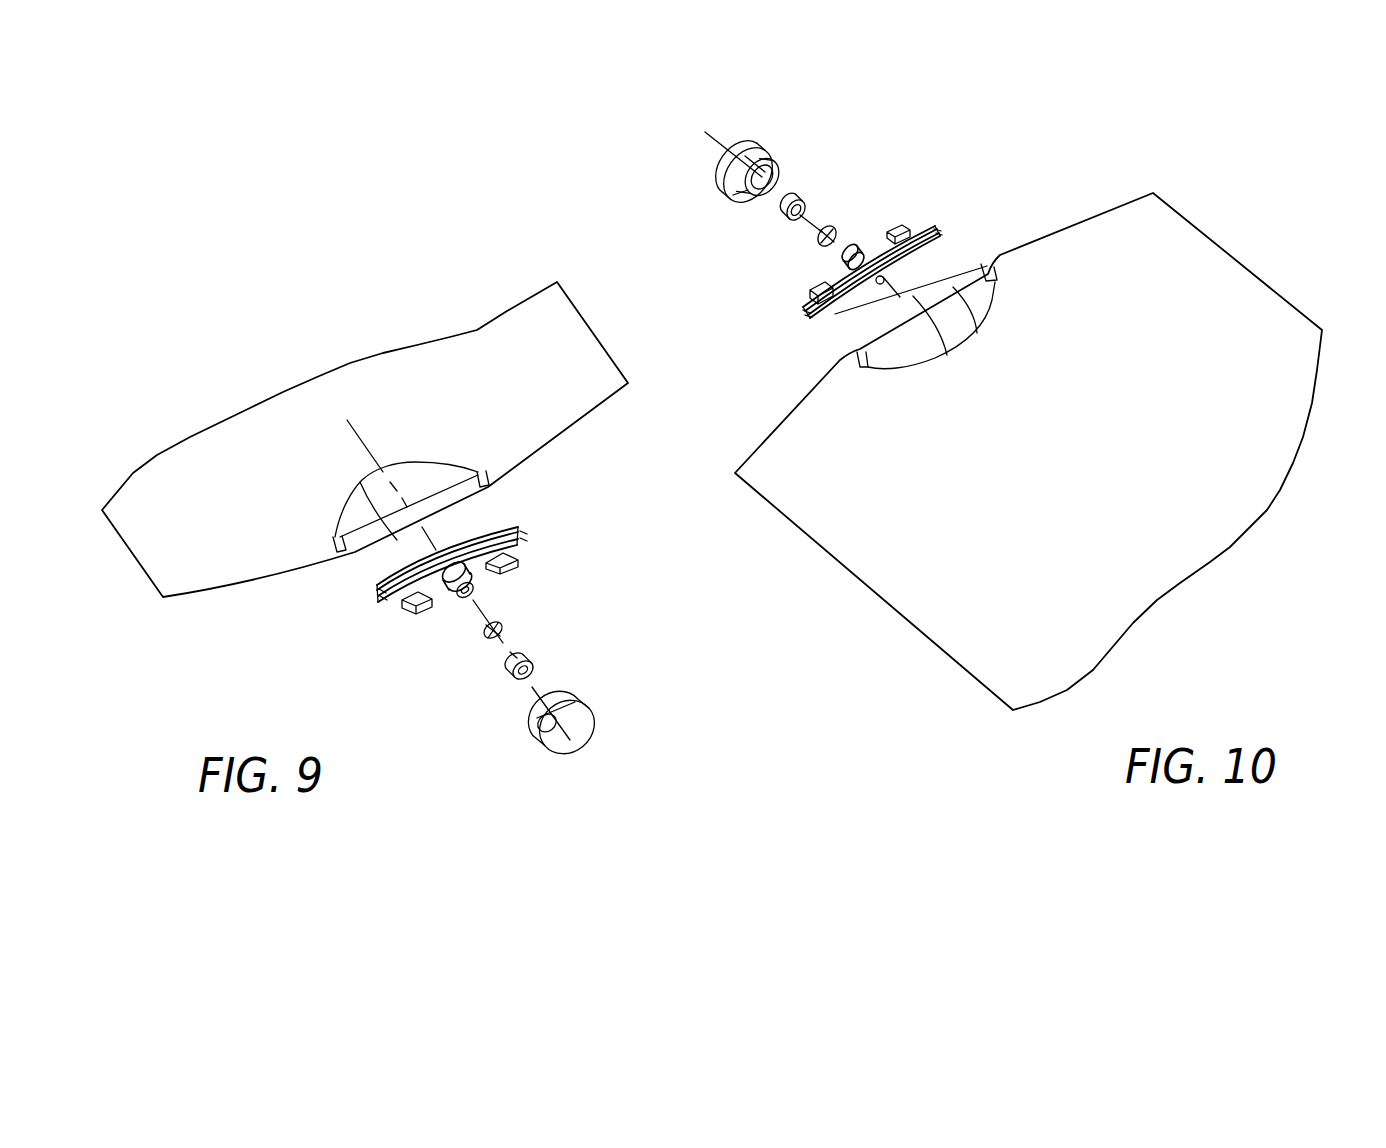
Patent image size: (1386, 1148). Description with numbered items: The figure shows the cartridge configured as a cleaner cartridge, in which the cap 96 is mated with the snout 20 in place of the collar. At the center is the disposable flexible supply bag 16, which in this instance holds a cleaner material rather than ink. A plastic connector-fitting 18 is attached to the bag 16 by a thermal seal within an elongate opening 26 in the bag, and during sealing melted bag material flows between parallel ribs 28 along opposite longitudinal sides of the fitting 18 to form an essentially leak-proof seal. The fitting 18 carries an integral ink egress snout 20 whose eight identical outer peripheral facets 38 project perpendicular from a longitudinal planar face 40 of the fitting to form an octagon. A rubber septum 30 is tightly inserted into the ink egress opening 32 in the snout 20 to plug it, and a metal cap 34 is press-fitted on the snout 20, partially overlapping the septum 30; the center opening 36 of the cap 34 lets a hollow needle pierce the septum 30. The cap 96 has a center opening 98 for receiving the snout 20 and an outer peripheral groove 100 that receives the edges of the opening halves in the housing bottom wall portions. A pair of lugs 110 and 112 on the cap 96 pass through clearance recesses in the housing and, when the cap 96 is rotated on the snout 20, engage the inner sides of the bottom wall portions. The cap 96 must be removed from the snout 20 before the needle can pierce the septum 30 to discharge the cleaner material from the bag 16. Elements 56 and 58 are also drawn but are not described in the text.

In FIG. 9, the flexible supply bag 16 is at (243, 382).
In FIG. 10, the flexible supply bag 16 is at (1233, 593).
In FIG. 9, the connector-fitting 18 is at (363, 600).
In FIG. 10, the connector-fitting 18 is at (797, 340).
In FIG. 9, the ink egress snout 20 is at (449, 604).
In FIG. 10, the ink egress snout 20 is at (803, 297).
In FIG. 9, the elongate opening 26 is at (372, 508).
In FIG. 10, the elongate opening 26 is at (870, 332).
In FIG. 9, the parallel ribs 28 is at (403, 577).
In FIG. 10, the parallel ribs 28 is at (937, 233).
In FIG. 9, the rubber septum 30 is at (503, 628).
In FIG. 10, the rubber septum 30 is at (837, 233).
In FIG. 9, the ink egress opening 32 is at (473, 587).
In FIG. 10, the ink egress opening 32 is at (884, 285).
In FIG. 9, the cap 34 is at (530, 657).
In FIG. 10, the cap 34 is at (785, 221).
In FIG. 9, the center opening 36 is at (530, 668).
In FIG. 10, the center opening 36 is at (802, 218).
In FIG. 10, the outer peripheral facets 38 is at (903, 262).
In FIG. 9, the longitudinal planar face 40 is at (450, 537).
In FIG. 10, the longitudinal planar face 40 is at (827, 267).
In FIG. 9, the left tab 56 is at (408, 606).
In FIG. 10, the left tab 56 is at (800, 322).
In FIG. 9, the right tab 58 is at (520, 567).
In FIG. 10, the right tab 58 is at (903, 224).
In FIG. 9, the cap 96 is at (558, 729).
In FIG. 10, the cap 96 is at (729, 161).
In FIG. 10, the center opening 98 is at (772, 178).
In FIG. 9, the outer peripheral groove 100 is at (543, 712).
In FIG. 10, the outer peripheral groove 100 is at (773, 143).
In FIG. 9, the lug 110 is at (532, 720).
In FIG. 10, the lug 110 is at (743, 198).
In FIG. 9, the lug 112 is at (573, 697).
In FIG. 10, the lug 112 is at (783, 163).